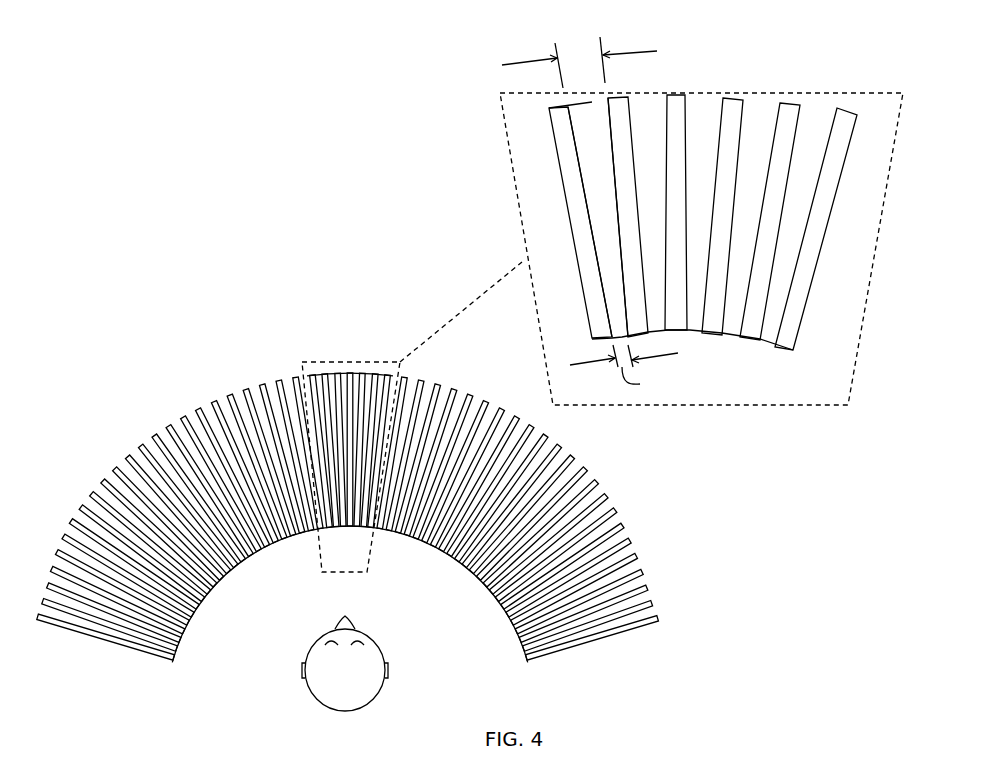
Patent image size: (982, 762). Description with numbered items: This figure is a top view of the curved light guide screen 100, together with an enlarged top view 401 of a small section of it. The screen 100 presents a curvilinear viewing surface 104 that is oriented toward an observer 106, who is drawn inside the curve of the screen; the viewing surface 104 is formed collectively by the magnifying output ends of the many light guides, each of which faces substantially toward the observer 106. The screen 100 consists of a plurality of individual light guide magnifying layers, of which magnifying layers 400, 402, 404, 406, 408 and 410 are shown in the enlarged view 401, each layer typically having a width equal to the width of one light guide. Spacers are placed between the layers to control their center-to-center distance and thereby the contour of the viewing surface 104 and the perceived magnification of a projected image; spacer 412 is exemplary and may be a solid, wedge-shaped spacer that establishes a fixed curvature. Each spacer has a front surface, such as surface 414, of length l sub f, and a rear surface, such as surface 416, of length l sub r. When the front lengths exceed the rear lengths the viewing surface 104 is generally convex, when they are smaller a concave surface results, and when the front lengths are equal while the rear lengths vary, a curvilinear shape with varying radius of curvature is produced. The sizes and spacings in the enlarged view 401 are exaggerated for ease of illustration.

The curved light guide screen 100 is at (174, 388).
The curvilinear viewing surface 104 is at (492, 581).
The observer 106 is at (324, 683).
The light guide magnifying layer 400 is at (575, 203).
The enlarged top view 401 is at (778, 383).
The light guide magnifying layer 402 is at (630, 232).
The light guide magnifying layer 404 is at (677, 115).
The light guide magnifying layer 406 is at (737, 117).
The light guide magnifying layer 408 is at (787, 120).
The light guide magnifying layer 410 is at (845, 120).
The spacer 412 is at (590, 156).
The front surface of spacer 414 is at (620, 337).
The rear surface of spacer 416 is at (592, 102).